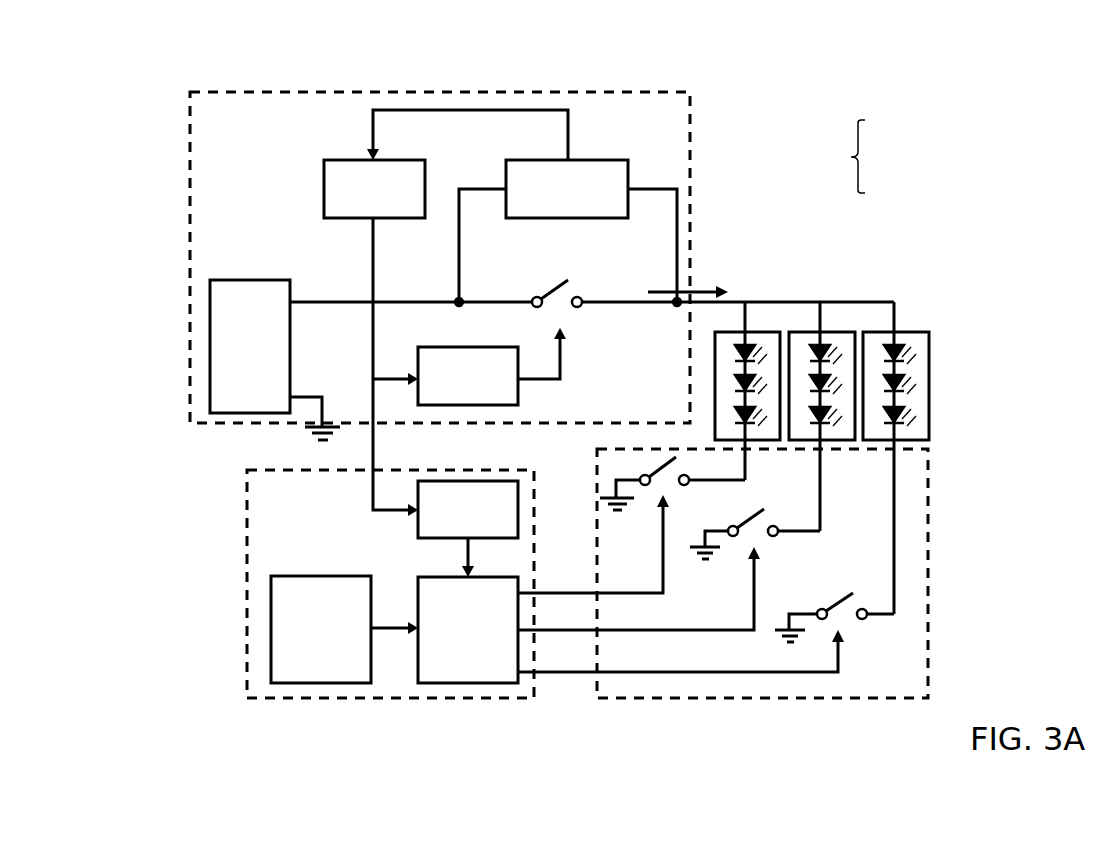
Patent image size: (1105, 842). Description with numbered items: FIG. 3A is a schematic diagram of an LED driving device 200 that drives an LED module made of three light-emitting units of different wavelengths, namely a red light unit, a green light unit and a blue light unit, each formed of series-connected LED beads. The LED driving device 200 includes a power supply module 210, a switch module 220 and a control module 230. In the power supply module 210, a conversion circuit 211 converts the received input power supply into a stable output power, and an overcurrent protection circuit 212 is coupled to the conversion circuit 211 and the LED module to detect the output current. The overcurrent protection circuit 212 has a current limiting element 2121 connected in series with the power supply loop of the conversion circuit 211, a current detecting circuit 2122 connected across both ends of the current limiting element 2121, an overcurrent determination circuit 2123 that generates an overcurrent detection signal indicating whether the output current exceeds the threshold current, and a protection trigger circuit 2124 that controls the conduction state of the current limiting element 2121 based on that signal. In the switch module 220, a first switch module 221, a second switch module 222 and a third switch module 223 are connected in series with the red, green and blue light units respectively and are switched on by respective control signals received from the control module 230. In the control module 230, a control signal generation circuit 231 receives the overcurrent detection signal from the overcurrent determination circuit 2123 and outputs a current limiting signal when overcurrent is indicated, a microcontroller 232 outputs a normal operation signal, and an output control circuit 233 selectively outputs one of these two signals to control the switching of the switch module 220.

The LED driving device 200 is at (874, 789).
The power supply module 210 is at (462, 92).
The conversion circuit 211 is at (236, 358).
The overcurrent protection circuit 212 is at (749, 105).
The current limiting element 2121 is at (579, 296).
The current detecting circuit 2122 is at (548, 199).
The overcurrent determination circuit 2123 is at (355, 199).
The protection trigger circuit 2124 is at (449, 387).
The switch module 220 is at (758, 698).
The first switch module 221 is at (688, 485).
The second switch module 222 is at (776, 536).
The third switch module 223 is at (864, 619).
The control module 230 is at (383, 698).
The control signal generation circuit 231 is at (454, 520).
The microcontroller 232 is at (307, 639).
The output control circuit 233 is at (454, 639).